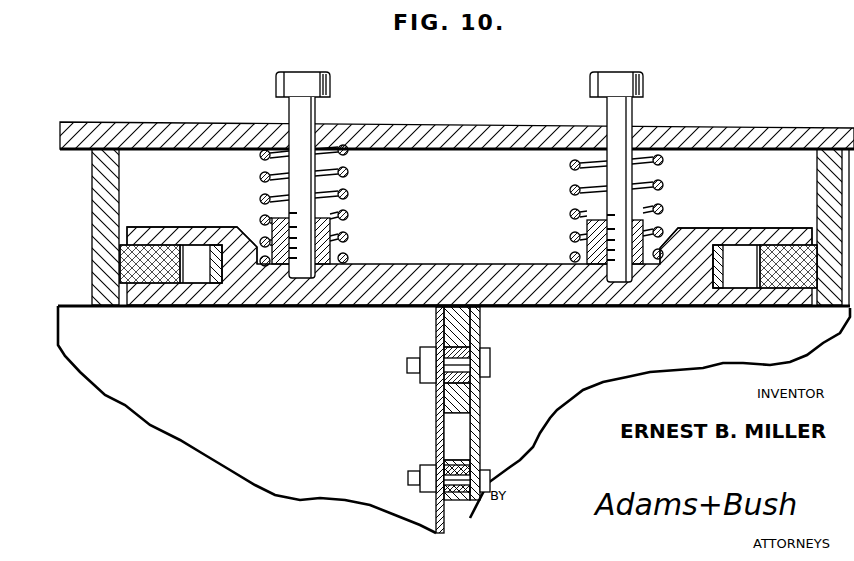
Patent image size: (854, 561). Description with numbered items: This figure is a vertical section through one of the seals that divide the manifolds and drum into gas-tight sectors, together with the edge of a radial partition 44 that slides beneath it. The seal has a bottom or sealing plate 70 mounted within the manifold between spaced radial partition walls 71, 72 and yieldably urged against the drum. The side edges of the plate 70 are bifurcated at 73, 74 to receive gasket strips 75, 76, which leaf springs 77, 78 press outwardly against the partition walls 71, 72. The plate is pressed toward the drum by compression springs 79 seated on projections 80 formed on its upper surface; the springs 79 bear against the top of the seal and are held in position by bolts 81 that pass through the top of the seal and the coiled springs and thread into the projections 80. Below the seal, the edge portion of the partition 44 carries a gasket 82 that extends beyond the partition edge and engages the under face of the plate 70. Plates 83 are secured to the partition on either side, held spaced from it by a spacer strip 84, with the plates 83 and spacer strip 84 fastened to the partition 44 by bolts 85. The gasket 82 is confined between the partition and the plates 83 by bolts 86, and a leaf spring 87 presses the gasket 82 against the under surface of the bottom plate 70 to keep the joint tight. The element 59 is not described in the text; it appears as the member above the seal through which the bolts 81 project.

The cover plate 59 is at (468, 127).
The bolt 81 is at (316, 100).
The compression spring 79 is at (346, 178).
The projection 80 is at (344, 238).
The bottom or sealing plate 70 is at (386, 265).
The radial partition wall 71 is at (120, 184).
The radial partition wall 72 is at (817, 178).
The bifurcated side edge 73 is at (178, 228).
The bifurcated side edge 74 is at (766, 228).
The gasket strip 75 is at (178, 283).
The gasket strip 76 is at (752, 283).
The leaf spring 77 is at (202, 283).
The leaf spring 78 is at (728, 288).
The gasket 82 is at (466, 332).
The plate 83 is at (462, 414).
The spacer strip 84 is at (462, 462).
The bolt 85 is at (418, 477).
The bolt 86 is at (408, 372).
The leaf spring 87 is at (462, 432).
The radial partition 44 is at (437, 406).